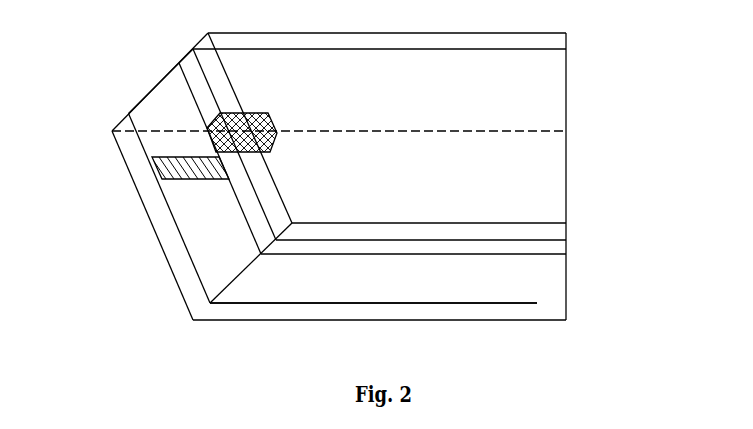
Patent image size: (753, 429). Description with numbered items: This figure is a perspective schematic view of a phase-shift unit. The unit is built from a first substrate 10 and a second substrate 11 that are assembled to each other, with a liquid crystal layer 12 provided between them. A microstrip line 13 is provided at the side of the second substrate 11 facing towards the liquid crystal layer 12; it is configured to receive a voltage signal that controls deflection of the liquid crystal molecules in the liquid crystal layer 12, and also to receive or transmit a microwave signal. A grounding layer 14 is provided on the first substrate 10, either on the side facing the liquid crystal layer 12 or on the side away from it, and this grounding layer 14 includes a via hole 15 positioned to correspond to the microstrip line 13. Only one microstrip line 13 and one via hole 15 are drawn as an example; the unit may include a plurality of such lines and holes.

The first substrate 10 is at (553, 43).
The second substrate 11 is at (545, 312).
The liquid crystal layer 12 is at (545, 286).
The microstrip line 13 is at (157, 168).
The grounding layer 14 is at (548, 248).
The via hole 15 is at (275, 138).